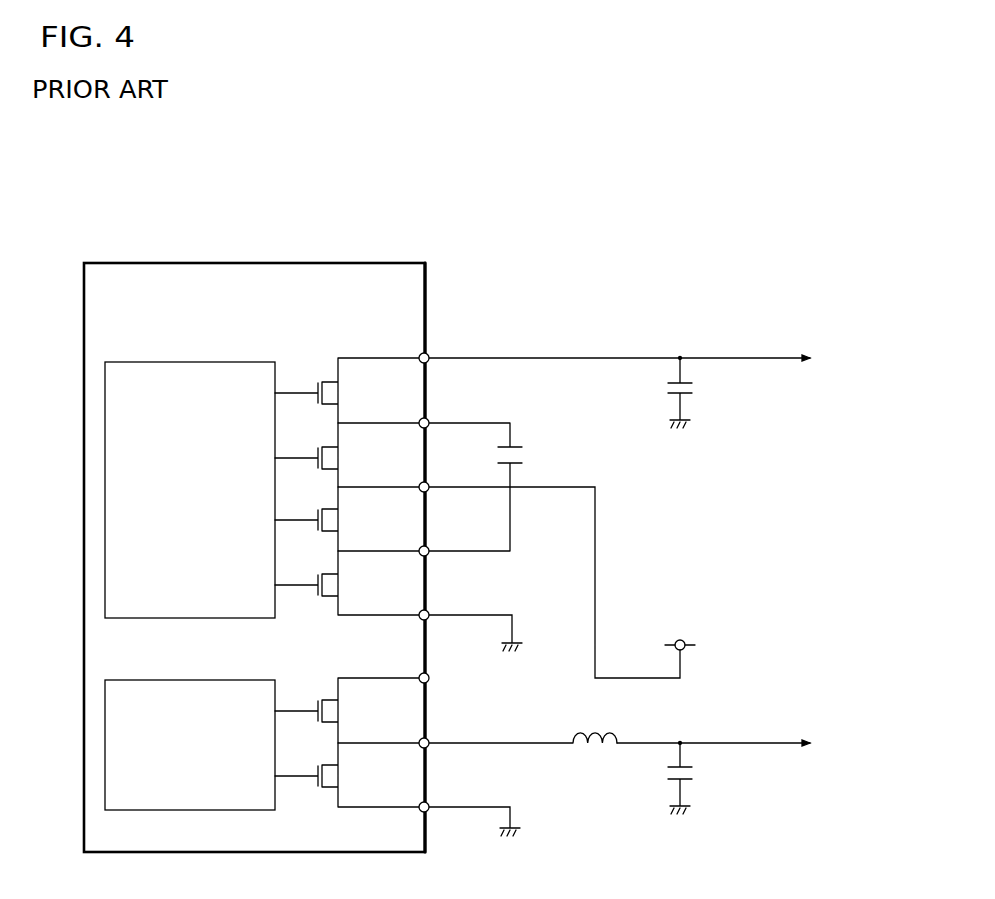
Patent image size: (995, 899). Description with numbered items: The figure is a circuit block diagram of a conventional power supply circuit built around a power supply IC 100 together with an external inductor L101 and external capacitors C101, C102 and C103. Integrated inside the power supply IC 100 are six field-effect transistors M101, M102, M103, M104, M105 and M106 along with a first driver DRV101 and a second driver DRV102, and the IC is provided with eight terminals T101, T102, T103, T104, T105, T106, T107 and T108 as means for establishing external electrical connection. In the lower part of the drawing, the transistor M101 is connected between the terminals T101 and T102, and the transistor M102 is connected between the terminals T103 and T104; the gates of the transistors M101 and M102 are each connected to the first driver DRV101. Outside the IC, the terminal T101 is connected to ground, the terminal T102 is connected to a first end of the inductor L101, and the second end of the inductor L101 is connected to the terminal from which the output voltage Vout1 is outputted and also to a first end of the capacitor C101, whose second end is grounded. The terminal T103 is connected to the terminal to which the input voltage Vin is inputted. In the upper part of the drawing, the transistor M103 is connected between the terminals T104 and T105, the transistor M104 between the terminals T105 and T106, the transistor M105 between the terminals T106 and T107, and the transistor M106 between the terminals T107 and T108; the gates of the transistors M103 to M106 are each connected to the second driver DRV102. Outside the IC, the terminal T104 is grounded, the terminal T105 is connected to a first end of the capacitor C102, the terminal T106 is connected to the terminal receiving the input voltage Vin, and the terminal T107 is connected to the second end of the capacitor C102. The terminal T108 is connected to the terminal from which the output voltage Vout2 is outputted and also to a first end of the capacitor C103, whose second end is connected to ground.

The power supply IC 100 is at (258, 263).
The first driver DRV101 is at (194, 680).
The second driver DRV102 is at (195, 362).
The field-effect transistor M101 is at (349, 775).
The field-effect transistor M102 is at (349, 710).
The field-effect transistor M103 is at (349, 583).
The field-effect transistor M104 is at (349, 519).
The field-effect transistor M105 is at (349, 455).
The field-effect transistor M106 is at (349, 390).
The terminal T101 is at (429, 814).
The terminal T102 is at (429, 750).
The terminal T103 is at (429, 685).
The terminal T104 is at (429, 622).
The terminal T105 is at (429, 558).
The terminal T106 is at (429, 494).
The terminal T107 is at (429, 430).
The terminal T108 is at (429, 365).
The capacitor C101 is at (710, 778).
The capacitor C102 is at (504, 487).
The capacitor C103 is at (710, 393).
The inductor L101 is at (596, 731).
The input voltage Vin is at (577, 582).
The output voltage Vout1 is at (743, 743).
The output voltage Vout2 is at (647, 358).